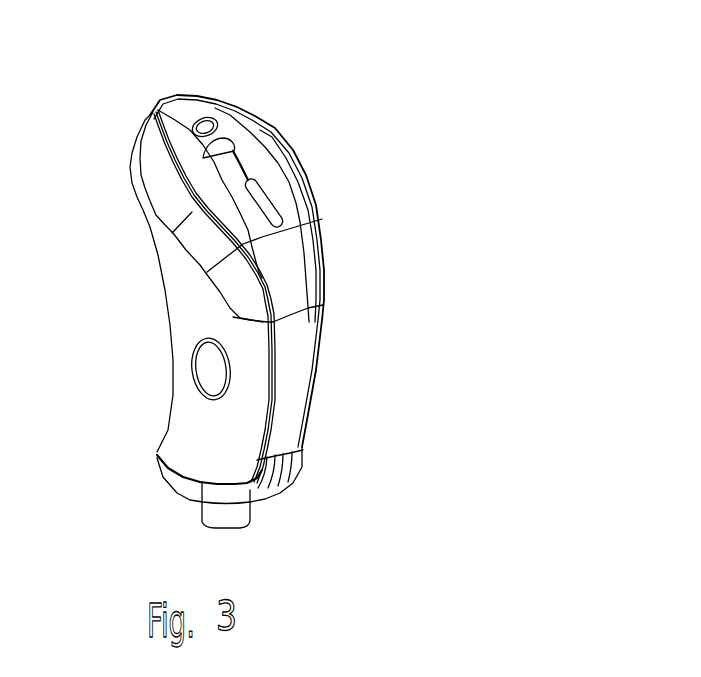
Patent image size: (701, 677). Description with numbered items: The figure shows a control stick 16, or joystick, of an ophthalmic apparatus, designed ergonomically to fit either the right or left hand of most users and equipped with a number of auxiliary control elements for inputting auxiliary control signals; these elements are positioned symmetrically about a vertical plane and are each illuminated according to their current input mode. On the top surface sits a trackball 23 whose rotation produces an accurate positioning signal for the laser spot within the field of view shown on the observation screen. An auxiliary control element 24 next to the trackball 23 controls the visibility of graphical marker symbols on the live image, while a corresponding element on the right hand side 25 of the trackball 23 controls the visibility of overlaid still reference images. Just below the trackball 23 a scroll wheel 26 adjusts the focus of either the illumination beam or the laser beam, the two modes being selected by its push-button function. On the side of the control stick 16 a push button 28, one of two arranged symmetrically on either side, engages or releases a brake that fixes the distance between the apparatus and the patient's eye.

The control stick 16 is at (378, 283).
The trackball 23 is at (212, 121).
The auxiliary control element 24 is at (193, 163).
The right hand side 25 is at (298, 170).
The scroll wheel 26 is at (268, 197).
The push button 28 is at (212, 366).